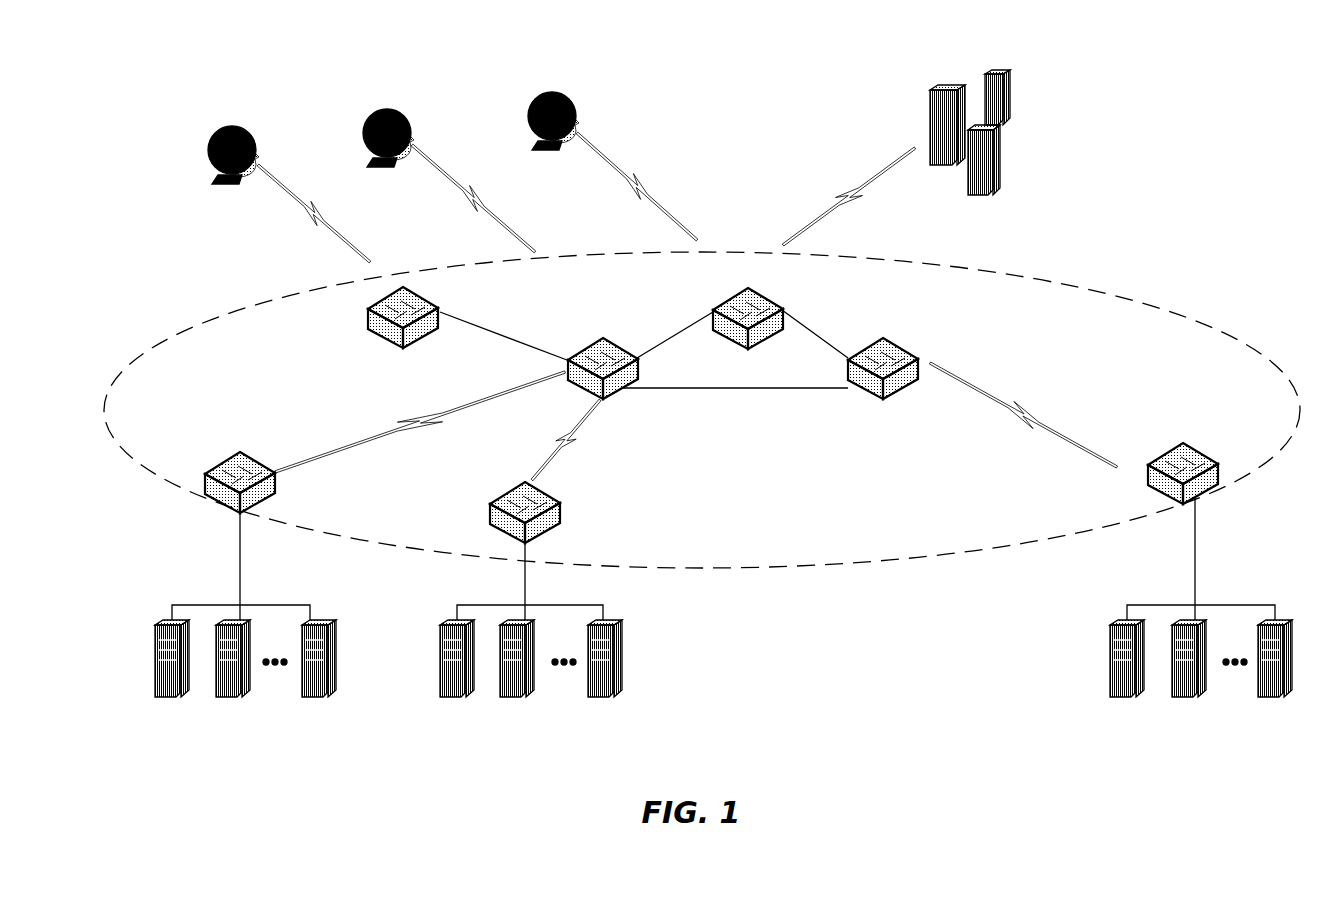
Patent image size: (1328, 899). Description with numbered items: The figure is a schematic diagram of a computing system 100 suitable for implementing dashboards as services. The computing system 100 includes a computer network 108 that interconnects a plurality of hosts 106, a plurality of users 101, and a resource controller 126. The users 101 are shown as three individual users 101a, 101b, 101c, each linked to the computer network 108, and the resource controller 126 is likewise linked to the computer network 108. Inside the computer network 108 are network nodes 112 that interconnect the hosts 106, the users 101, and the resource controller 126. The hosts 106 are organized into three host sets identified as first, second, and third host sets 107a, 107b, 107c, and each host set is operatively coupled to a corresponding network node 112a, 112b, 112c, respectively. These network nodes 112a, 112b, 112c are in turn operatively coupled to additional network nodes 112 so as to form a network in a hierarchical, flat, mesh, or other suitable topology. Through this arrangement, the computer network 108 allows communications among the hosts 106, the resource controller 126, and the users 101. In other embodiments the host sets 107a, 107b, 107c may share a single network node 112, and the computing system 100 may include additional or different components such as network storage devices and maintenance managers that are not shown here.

The computing system 100 is at (1090, 150).
The users 101 is at (208, 78).
The user 101a is at (198, 132).
The user 101b is at (356, 118).
The user 101c is at (522, 102).
The hosts 106 is at (158, 626).
The first host set 107a is at (112, 572).
The second host set 107b is at (438, 592).
The third host set 107c is at (1242, 578).
The computer network 108 is at (702, 410).
The network nodes 112 is at (378, 298).
The network node 112a is at (215, 462).
The network node 112b is at (515, 492).
The network node 112c is at (1205, 452).
The resource controller 126 is at (905, 158).